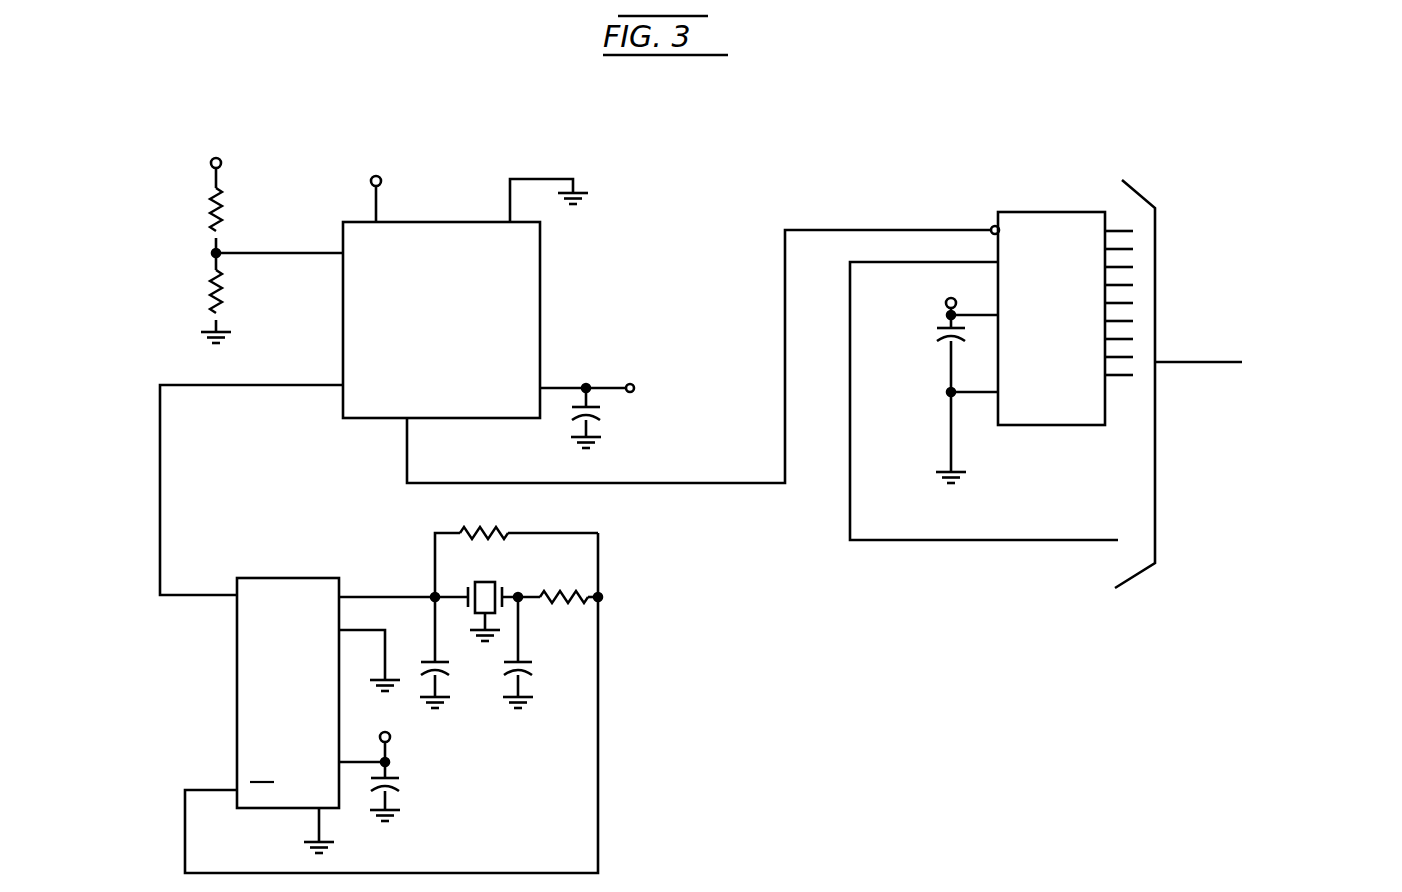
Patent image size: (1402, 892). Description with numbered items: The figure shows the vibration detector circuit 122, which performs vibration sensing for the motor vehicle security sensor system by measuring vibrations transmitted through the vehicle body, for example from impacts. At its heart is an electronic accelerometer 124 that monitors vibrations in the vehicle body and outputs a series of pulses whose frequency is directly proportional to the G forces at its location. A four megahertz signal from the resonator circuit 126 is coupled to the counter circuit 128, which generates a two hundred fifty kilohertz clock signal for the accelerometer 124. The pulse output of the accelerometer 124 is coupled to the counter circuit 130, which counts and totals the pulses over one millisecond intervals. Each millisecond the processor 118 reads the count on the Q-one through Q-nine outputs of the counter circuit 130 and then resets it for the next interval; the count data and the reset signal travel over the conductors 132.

The processor 118 is at (1302, 380).
The vibration detector circuit 122 is at (953, 76).
The accelerometer 124 is at (540, 308).
The resonator circuit 126 is at (554, 570).
The counter circuit 128 is at (237, 672).
The counter circuit 130 is at (1053, 212).
The conductors 132 is at (1200, 362).